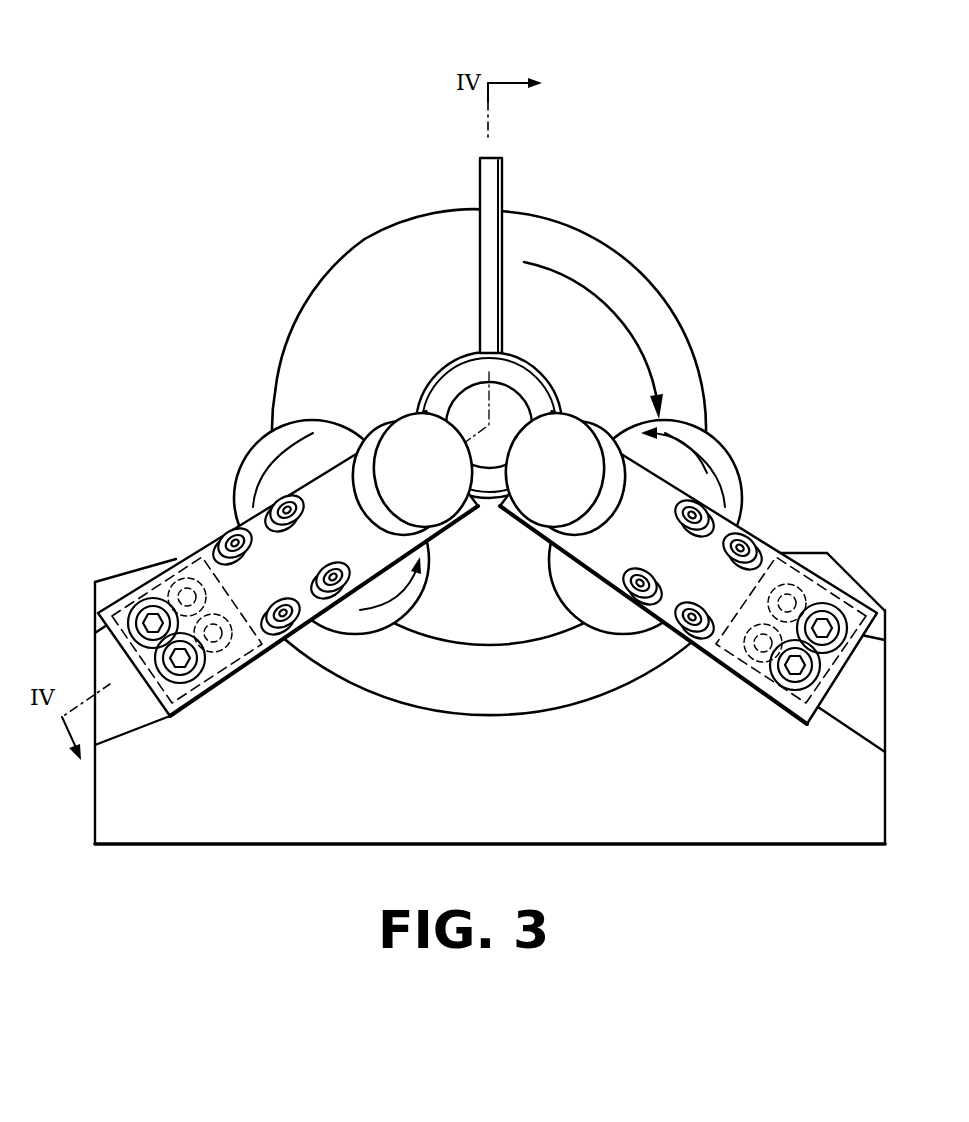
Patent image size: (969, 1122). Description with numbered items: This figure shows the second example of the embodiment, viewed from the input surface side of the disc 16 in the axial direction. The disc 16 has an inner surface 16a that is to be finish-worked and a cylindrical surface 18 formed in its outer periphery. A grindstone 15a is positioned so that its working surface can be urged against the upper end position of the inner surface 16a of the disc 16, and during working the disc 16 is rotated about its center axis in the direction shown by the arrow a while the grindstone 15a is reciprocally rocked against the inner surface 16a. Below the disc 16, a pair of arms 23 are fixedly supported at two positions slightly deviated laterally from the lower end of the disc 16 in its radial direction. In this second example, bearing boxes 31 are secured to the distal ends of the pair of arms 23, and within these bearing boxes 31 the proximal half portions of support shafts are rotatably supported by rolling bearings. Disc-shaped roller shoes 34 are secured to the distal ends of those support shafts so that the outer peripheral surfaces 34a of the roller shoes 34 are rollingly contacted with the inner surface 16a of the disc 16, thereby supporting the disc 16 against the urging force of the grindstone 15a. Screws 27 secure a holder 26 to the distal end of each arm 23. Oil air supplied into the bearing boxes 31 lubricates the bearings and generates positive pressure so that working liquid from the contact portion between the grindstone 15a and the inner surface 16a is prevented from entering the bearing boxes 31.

The grindstone 15a is at (503, 183).
The disc 16 is at (603, 265).
The inner surface 16a is at (403, 247).
The cylindrical surface 18 is at (308, 292).
The support arms 23 is at (246, 645).
The bifurcated holder 26 is at (587, 547).
The screws 27 is at (268, 507).
The bearing boxes 31 is at (400, 430).
The roller shoes 34 is at (380, 617).
The outer peripheral surfaces 34a is at (751, 428).
The arrow indicating rotation direction a is at (622, 318).